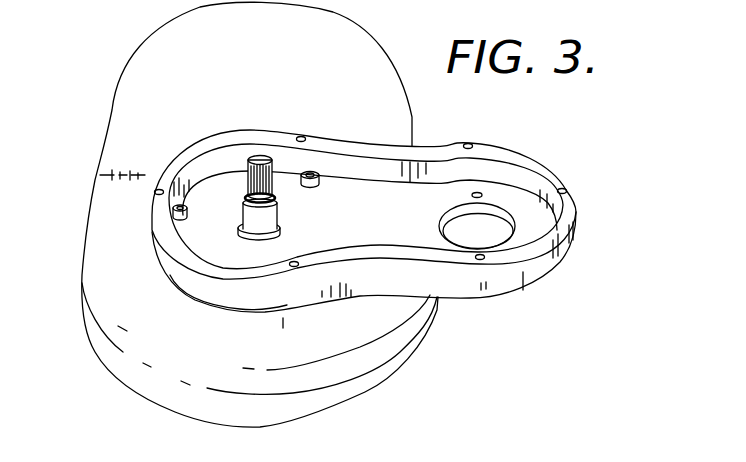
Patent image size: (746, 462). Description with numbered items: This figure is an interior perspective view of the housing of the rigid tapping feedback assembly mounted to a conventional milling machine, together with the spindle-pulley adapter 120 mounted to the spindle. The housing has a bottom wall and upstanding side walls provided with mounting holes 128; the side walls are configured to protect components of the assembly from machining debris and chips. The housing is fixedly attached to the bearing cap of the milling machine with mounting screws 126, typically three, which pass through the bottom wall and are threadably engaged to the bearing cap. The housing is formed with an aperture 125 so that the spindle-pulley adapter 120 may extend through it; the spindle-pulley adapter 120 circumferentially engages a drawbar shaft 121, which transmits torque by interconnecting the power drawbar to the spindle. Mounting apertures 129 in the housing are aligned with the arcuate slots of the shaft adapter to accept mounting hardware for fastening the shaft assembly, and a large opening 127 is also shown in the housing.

The spindle-pulley adapter 120 is at (252, 212).
The drawbar shaft 121 is at (260, 156).
The aperture 125 is at (280, 232).
The mounting screws 126 is at (320, 183).
The large opening 127 is at (446, 238).
The mounting holes 128 is at (155, 193).
The mounting apertures 129 is at (482, 196).